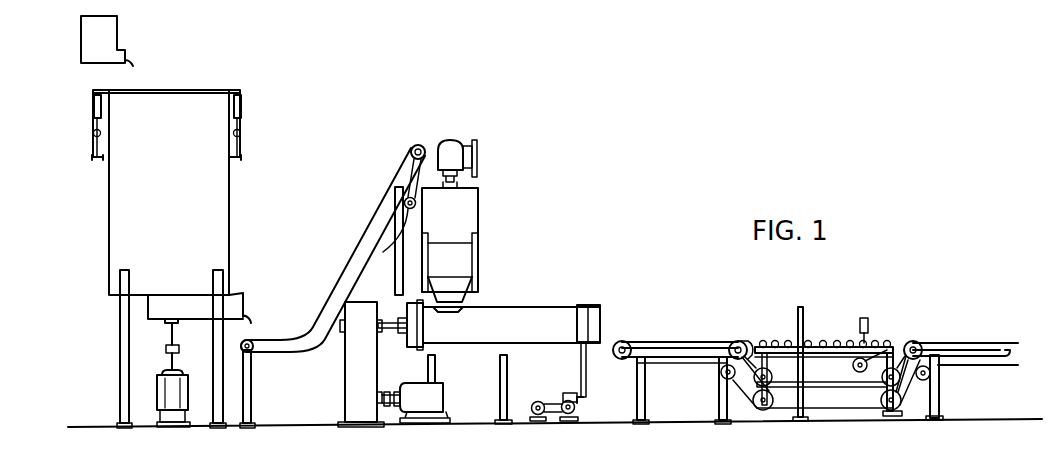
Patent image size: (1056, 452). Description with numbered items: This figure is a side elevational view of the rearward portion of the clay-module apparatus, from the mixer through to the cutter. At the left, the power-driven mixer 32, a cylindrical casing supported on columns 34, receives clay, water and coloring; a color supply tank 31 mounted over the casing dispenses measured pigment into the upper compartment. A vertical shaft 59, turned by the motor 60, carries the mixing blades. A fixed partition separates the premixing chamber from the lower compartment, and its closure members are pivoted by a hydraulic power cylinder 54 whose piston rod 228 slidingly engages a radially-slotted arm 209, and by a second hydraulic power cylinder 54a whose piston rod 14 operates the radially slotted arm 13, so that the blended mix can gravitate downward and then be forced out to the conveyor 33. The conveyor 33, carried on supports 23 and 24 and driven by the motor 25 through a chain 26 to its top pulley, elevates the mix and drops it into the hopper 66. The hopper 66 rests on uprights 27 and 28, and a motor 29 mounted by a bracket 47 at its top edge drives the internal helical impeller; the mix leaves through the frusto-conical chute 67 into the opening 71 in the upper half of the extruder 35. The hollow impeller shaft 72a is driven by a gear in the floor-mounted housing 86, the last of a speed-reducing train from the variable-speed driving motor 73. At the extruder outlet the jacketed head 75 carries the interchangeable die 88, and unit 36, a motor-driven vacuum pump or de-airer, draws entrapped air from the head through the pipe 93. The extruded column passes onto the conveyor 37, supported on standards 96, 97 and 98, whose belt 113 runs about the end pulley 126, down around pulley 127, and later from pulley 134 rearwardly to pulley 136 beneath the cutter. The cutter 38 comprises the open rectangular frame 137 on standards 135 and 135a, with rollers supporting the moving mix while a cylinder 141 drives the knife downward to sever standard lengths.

The color supply tank 31 is at (81, 38).
The mixer 32 is at (109, 197).
The hydraulic power cylinder 54 is at (93, 107).
The hydraulic power cylinder 54a is at (243, 105).
The piston rod 228 is at (94, 133).
The piston rod 14 is at (242, 133).
The radially-slotted arm 209 is at (92, 158).
The radially slotted arm 13 is at (240, 158).
The columns 34 is at (120, 353).
The vertical shaft 59 is at (171, 332).
The motor 60 is at (170, 383).
The support 23 is at (252, 362).
The conveyor 33 is at (323, 312).
The chain 26 is at (413, 173).
The driving motor 25 is at (393, 243).
The support 24 is at (395, 282).
The motor 29 is at (452, 140).
The bracket 47 is at (477, 152).
The hopper 66 is at (475, 212).
The chute 67 is at (465, 293).
The upright 27 is at (428, 258).
The upright 28 is at (479, 258).
The extruder 35 is at (531, 312).
The opening 71 is at (462, 308).
The die 88 is at (600, 312).
The jacketed head 75 is at (582, 305).
The pipe 93 is at (581, 363).
The unit 36 is at (558, 389).
The shaft 72a is at (388, 330).
The housing 86 is at (345, 388).
The variable-speed driving motor 73 is at (425, 405).
The conveyor 37 is at (666, 345).
The conveyor belt 113 is at (708, 342).
The end pulley 126 is at (623, 358).
The standard 96 is at (637, 407).
The standard 97 is at (720, 392).
The pulley 127 is at (745, 342).
The pulley 136 is at (757, 408).
The pulley 134 is at (883, 395).
The cutter 38 is at (789, 332).
The standards 135a is at (805, 415).
The standards 135 is at (903, 421).
The cutter frame 137 is at (822, 353).
The cylinder 141 is at (866, 323).
The standard 98 is at (939, 395).